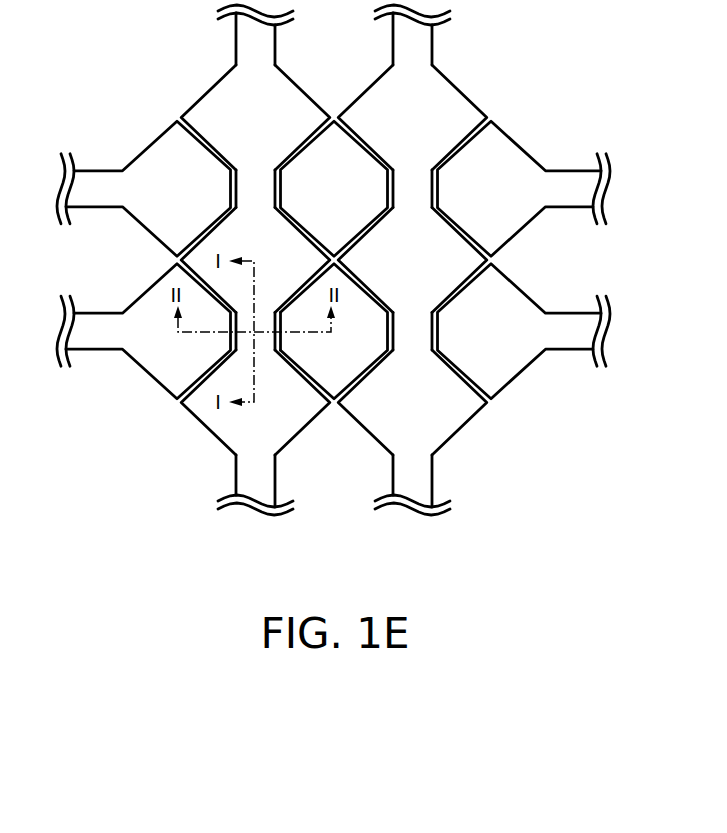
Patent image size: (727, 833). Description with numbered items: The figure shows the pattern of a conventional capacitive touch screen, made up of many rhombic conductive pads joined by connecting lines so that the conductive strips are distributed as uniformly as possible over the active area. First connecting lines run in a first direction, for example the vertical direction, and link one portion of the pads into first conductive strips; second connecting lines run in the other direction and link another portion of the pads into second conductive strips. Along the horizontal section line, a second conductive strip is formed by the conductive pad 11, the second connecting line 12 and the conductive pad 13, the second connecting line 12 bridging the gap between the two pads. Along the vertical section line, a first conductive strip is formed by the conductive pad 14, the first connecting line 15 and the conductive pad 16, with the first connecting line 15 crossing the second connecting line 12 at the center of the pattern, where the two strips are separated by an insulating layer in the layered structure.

The conductive pad 11 is at (189, 359).
The second connecting line 12 is at (278, 326).
The conductive pad 13 is at (313, 359).
The conductive pad 14 is at (267, 270).
The first connecting line 15 is at (248, 327).
The conductive pad 16 is at (265, 412).